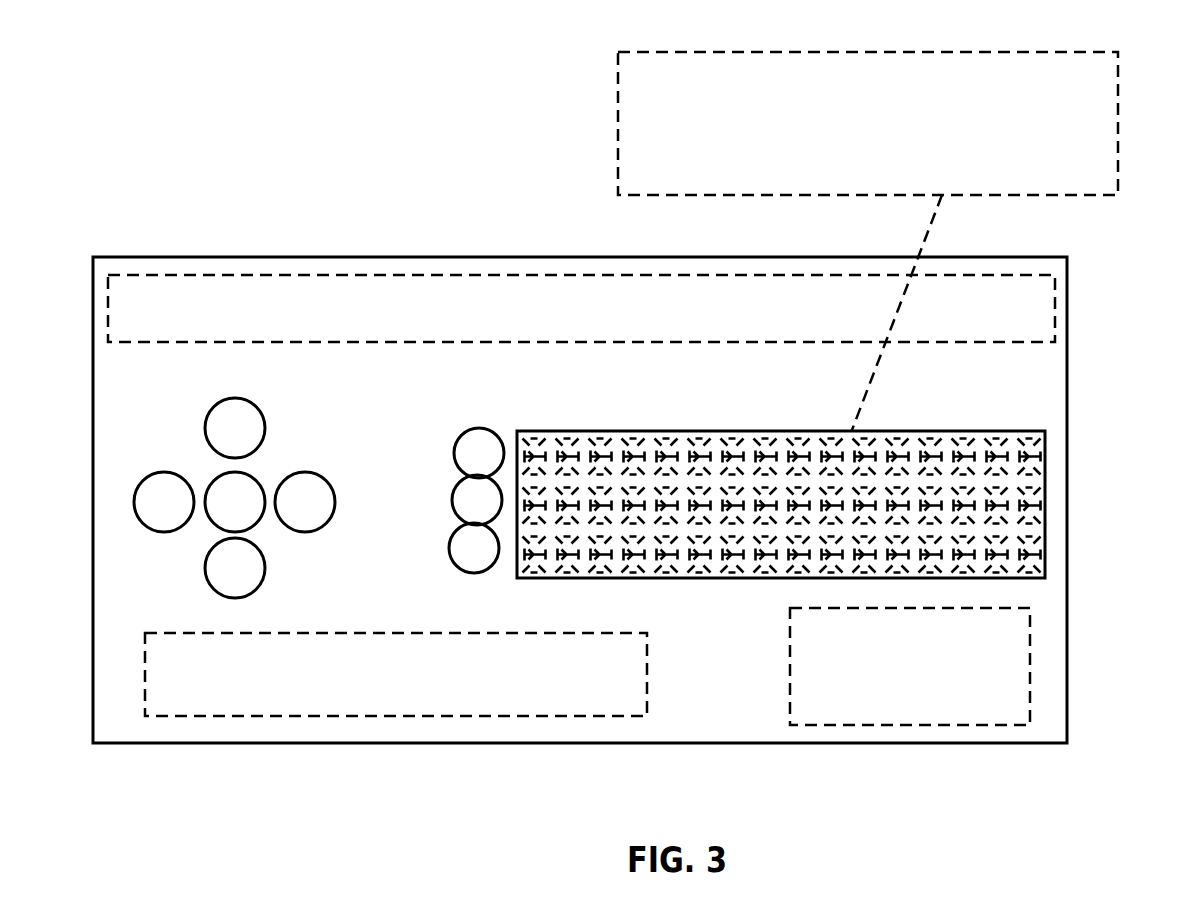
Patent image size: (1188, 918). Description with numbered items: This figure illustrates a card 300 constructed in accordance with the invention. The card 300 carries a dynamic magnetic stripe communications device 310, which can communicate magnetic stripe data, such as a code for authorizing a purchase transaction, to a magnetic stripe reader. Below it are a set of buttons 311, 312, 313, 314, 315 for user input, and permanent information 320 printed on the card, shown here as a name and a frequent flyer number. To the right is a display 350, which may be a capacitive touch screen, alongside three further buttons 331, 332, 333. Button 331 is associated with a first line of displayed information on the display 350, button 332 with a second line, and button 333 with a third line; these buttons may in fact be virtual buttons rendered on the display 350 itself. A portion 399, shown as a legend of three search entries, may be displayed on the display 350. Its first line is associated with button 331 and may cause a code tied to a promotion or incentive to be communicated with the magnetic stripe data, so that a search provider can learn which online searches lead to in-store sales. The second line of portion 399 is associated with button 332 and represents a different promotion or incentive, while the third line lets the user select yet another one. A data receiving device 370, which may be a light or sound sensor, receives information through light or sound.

The card 300 is at (1118, 410).
The dynamic magnetic stripe communications device 310 is at (178, 342).
The button 311 is at (165, 473).
The button 312 is at (236, 400).
The button 313 is at (235, 473).
The button 314 is at (350, 463).
The button 315 is at (207, 569).
The permanent information 320 is at (147, 668).
The button 331 is at (480, 429).
The button 332 is at (478, 476).
The button 333 is at (475, 523).
The display 350 is at (773, 579).
The data receiving device 370 is at (800, 724).
The portion 399 is at (618, 121).